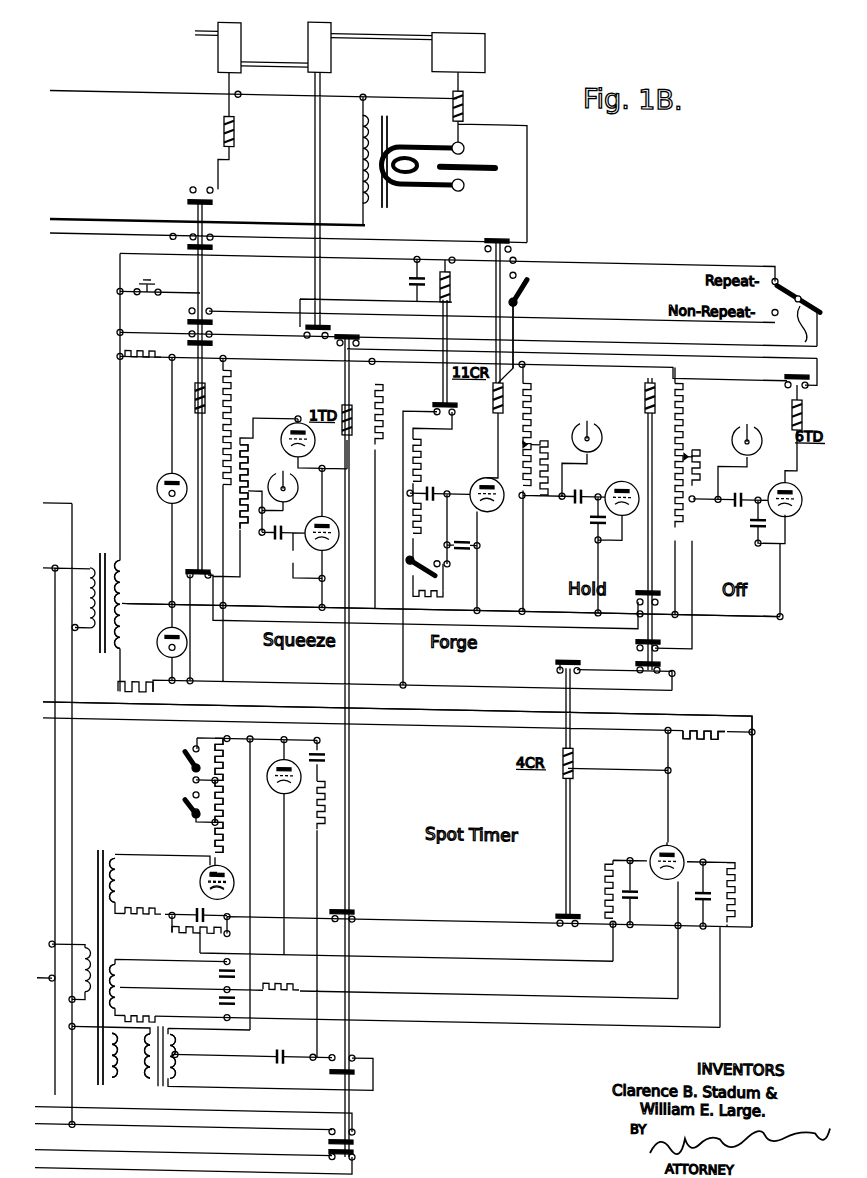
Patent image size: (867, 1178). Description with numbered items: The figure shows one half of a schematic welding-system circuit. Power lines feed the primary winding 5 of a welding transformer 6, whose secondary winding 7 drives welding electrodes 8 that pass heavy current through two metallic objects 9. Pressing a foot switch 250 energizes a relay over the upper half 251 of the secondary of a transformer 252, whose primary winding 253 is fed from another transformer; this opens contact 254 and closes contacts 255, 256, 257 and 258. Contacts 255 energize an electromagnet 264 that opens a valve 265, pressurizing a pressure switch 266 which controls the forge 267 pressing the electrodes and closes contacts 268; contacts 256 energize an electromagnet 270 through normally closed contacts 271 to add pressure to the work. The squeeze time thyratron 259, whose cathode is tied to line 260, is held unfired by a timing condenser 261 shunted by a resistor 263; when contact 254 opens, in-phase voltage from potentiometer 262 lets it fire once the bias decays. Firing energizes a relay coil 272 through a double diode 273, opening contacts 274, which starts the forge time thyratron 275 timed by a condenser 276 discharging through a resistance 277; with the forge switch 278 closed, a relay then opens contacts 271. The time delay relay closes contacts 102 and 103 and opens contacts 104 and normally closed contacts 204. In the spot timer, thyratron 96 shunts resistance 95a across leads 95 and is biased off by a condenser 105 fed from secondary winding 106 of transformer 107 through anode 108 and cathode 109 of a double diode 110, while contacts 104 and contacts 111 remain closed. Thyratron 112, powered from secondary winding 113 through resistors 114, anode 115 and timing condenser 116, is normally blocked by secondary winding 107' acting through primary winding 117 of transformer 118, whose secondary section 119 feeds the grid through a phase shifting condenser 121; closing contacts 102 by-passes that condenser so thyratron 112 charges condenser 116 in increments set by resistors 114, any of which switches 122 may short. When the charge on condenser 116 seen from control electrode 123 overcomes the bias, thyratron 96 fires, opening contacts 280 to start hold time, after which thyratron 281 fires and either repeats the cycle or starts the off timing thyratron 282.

The primary winding 5 is at (360, 134).
The welding transformer 6 is at (399, 225).
The secondary winding 7 is at (420, 168).
The welding electrodes 8 is at (465, 145).
The metallic objects 9 is at (480, 170).
The leads 95 is at (239, 700).
The resistance 95a is at (700, 730).
The thyratron 96 is at (656, 834).
The relay contacts 102 is at (330, 1068).
The relay contacts 103 is at (354, 1133).
The relay contacts 104 is at (355, 905).
The condenser 105 is at (194, 913).
The secondary winding 106 is at (117, 880).
The transformer 107 is at (96, 958).
The secondary winding 107' is at (100, 1070).
The anode 108 is at (202, 872).
The cathode 109 is at (232, 888).
The double diode 110 is at (200, 887).
The contacts 111 is at (556, 904).
The thyratron 112 is at (296, 784).
The secondary winding 113 is at (118, 980).
The resistors 114 is at (225, 796).
The anode 115 is at (232, 872).
The timing condenser 116 is at (220, 975).
The primary winding 117 is at (145, 1078).
The transformer 118 is at (216, 1042).
The secondary winding section 119 is at (180, 1065).
The phase shifting condenser 121 is at (282, 1046).
The switches 122 is at (185, 777).
The control electrode 123 is at (647, 856).
The normally closed contacts 204 is at (354, 1148).
The foot switch 250 is at (165, 279).
The upper half of secondary winding 251 is at (124, 588).
The transformer 252 is at (124, 624).
The primary winding 253 is at (84, 568).
The contact 254 is at (186, 566).
The contacts 255 is at (213, 198).
The contacts 256 is at (206, 247).
The contacts 257 is at (213, 318).
The contacts 258 is at (213, 339).
The squeeze time thyratron 259 is at (334, 540).
The line 260 is at (280, 599).
The timing condenser 261 is at (278, 540).
The potentiometer 262 is at (246, 440).
The resistor 263 is at (283, 463).
The electromagnet 264 is at (234, 129).
The valve 265 is at (243, 30).
The pressure switch 266 is at (331, 55).
The forge 267 is at (485, 42).
The contacts 268 is at (330, 319).
The electromagnet 270 is at (463, 97).
The normally closed contacts 271 is at (501, 217).
The relay coil 272 is at (450, 285).
The double diode 273 is at (283, 428).
The contacts 274 is at (437, 396).
The forge time thyratron 275 is at (482, 472).
The condenser 276 is at (428, 478).
The resistance 277 is at (425, 590).
The forge switch 278 is at (525, 276).
The contacts 280 is at (575, 648).
The thyratron 281 is at (610, 510).
The off timing thyratron 282 is at (785, 467).